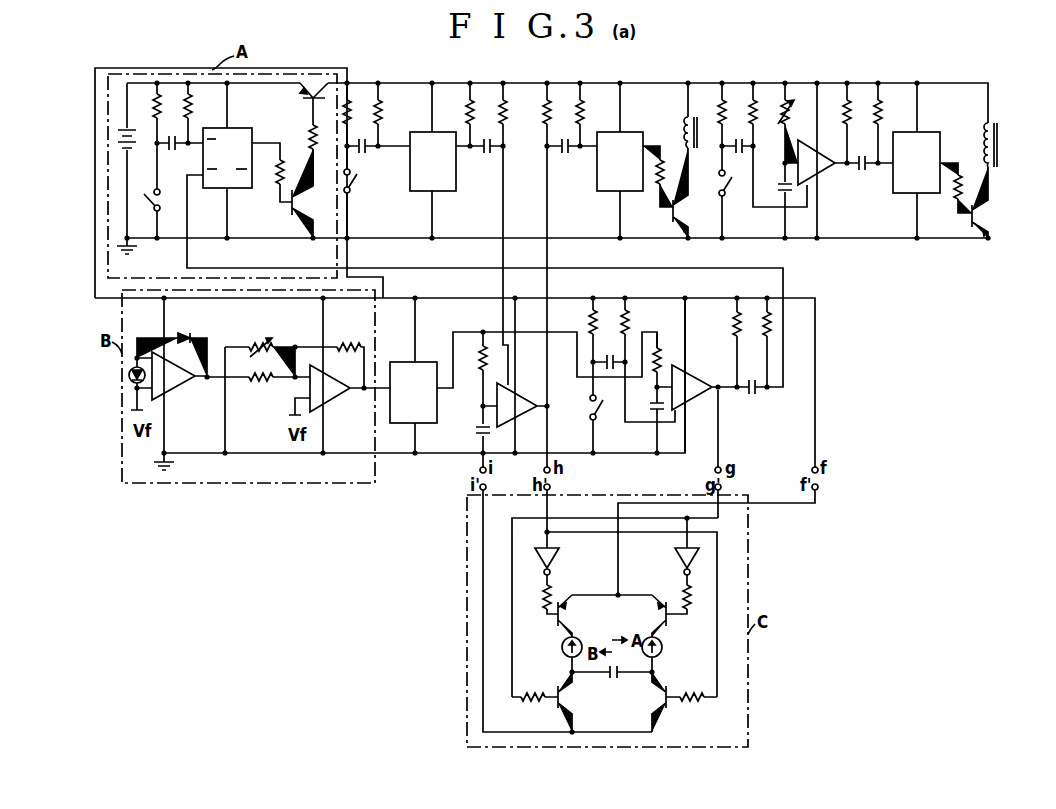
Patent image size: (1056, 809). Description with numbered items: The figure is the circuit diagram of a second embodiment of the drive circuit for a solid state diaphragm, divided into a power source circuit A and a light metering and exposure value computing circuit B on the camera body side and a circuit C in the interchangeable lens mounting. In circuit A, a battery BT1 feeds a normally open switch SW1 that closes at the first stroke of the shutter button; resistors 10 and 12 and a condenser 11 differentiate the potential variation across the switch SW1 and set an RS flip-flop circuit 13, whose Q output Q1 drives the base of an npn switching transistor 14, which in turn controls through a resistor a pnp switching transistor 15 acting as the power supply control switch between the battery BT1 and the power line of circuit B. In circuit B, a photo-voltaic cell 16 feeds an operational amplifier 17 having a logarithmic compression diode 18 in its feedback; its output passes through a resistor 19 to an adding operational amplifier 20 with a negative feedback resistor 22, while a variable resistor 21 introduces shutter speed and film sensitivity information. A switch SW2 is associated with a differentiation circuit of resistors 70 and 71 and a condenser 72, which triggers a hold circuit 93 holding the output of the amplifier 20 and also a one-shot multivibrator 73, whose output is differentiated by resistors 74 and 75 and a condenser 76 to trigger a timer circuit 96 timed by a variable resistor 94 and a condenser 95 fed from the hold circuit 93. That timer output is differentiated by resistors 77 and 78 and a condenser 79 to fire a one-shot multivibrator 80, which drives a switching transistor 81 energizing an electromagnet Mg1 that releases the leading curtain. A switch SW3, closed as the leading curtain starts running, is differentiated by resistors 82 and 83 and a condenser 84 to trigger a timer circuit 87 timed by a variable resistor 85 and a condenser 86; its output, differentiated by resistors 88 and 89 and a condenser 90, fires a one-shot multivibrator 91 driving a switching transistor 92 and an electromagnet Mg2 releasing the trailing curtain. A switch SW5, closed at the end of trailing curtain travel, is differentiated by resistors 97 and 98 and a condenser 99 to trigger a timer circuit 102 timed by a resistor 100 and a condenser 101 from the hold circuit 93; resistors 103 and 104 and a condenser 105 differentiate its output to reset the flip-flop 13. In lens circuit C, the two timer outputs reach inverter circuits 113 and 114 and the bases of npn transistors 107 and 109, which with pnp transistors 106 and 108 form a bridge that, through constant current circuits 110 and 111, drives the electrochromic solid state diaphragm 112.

The battery BT1 is at (118, 154).
The resistor 10 is at (162, 103).
The condenser 11 is at (170, 152).
The resistor 12 is at (193, 103).
The RS flip-flop circuit 13 is at (228, 129).
The flip-flop output Q1 is at (267, 131).
The npn switching transistor 14 is at (296, 211).
The pnp switching transistor 15 is at (313, 100).
The normally open switch SW1 is at (149, 207).
The photo-voltaic cell 16 is at (128, 378).
The operational amplifier 17 is at (172, 386).
The diode 18 is at (184, 332).
The resistor 19 is at (260, 382).
The operational amplifier 20 is at (331, 398).
The variable resistor 21 is at (253, 344).
The negative feedback resistor 22 is at (349, 345).
The resistor 70 is at (355, 101).
The resistor 71 is at (383, 110).
The condenser 72 is at (363, 155).
The switch SW2 is at (366, 192).
The one-shot multivibrator 73 is at (433, 160).
The resistor 74 is at (465, 115).
The resistor 75 is at (497, 118).
The condenser 76 is at (490, 158).
The resistor 77 is at (542, 114).
The resistor 78 is at (577, 114).
The condenser 79 is at (566, 155).
The one-shot multivibrator 80 is at (620, 160).
The switching transistor 81 is at (674, 217).
The electromagnet Mg1 is at (682, 128).
The resistor 82 is at (718, 116).
The resistor 83 is at (750, 116).
The condenser 84 is at (740, 155).
The switch SW3 is at (720, 196).
The variable resistor 85 is at (791, 128).
The condenser 86 is at (778, 208).
The timer circuit 87 is at (828, 196).
The resistor 88 is at (841, 116).
The resistor 89 is at (873, 116).
The condenser 90 is at (860, 172).
The one-shot multivibrator 91 is at (916, 160).
The switching transistor 92 is at (990, 212).
The electromagnet Mg2 is at (980, 128).
The hold circuit 93 is at (417, 418).
The variable resistor 94 is at (478, 369).
The condenser 95 is at (477, 428).
The timer circuit 96 is at (524, 397).
The resistor 97 is at (586, 324).
The resistor 98 is at (630, 330).
The condenser 99 is at (609, 372).
The switch SW5 is at (579, 407).
The resistor 100 is at (658, 358).
The condenser 101 is at (650, 414).
The timer circuit 102 is at (692, 404).
The resistor 103 is at (732, 334).
The resistor 104 is at (773, 334).
The condenser 105 is at (752, 397).
The pnp transistor 106 is at (564, 634).
The npn transistor 107 is at (564, 710).
The pnp transistor 108 is at (666, 628).
The npn transistor 109 is at (664, 714).
The constant current circuit 110 is at (576, 644).
The constant current circuit 111 is at (660, 652).
The solid state diaphragm 112 is at (614, 684).
The inverter circuit 113 is at (551, 555).
The inverter circuit 114 is at (680, 557).